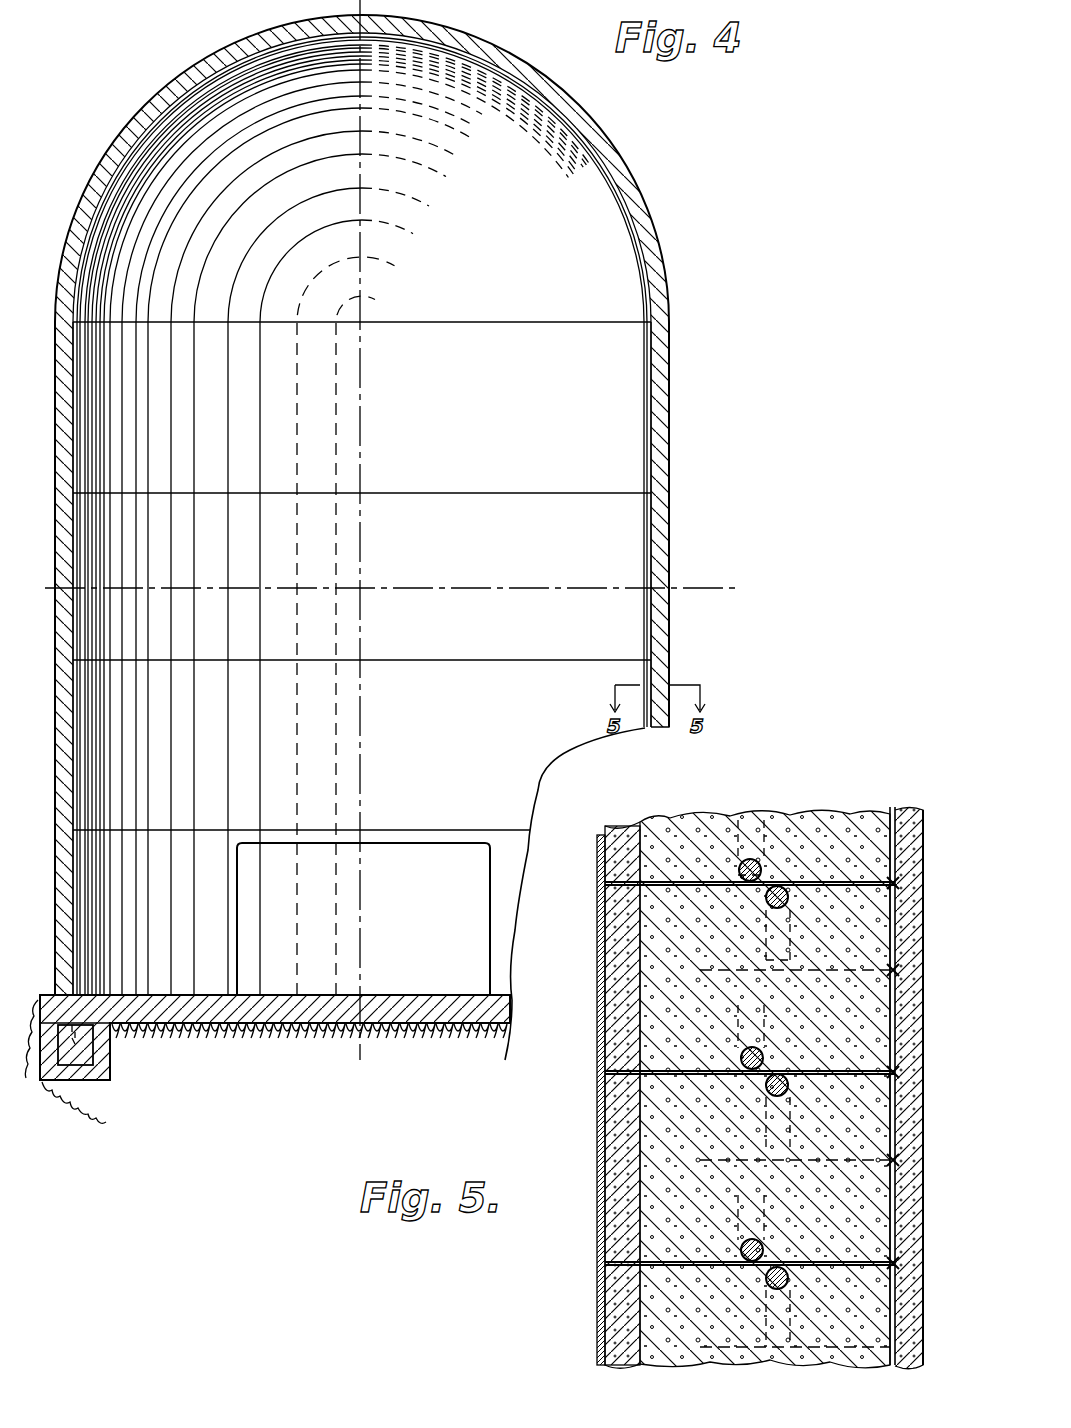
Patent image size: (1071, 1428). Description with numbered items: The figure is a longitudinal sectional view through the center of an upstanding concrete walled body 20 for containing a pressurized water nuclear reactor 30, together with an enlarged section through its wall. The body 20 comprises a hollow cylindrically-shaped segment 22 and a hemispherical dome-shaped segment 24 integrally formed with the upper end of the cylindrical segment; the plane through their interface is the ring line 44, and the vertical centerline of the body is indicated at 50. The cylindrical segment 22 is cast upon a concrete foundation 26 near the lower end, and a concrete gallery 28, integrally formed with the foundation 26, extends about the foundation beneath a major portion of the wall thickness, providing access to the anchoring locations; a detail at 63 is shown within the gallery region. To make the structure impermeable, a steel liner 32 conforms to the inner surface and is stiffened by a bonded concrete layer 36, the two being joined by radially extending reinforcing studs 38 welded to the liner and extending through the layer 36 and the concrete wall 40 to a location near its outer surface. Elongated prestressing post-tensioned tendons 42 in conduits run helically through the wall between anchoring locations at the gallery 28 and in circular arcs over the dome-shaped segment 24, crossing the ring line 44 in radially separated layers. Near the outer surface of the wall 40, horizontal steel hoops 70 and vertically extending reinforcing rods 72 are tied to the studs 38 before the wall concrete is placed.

In FIG. 4, the concrete walled body 20 is at (684, 312).
In FIG. 4, the cylindrically-shaped segment 22 is at (668, 463).
In FIG. 5, the cylindrically-shaped segment 22 is at (925, 1020).
In FIG. 4, the dome-shaped segment 24 is at (600, 134).
In FIG. 4, the foundation 26 is at (190, 1015).
In FIG. 4, the gallery 28 is at (100, 1070).
In FIG. 4, the pressurized water nuclear reactor 30 is at (430, 853).
In FIG. 4, the steel liner 32 is at (648, 505).
In FIG. 5, the steel liner 32 is at (598, 1103).
In FIG. 4, the concrete surface 36 is at (645, 625).
In FIG. 5, the concrete surface 36 is at (618, 1302).
In FIG. 5, the reinforcing studs 38 is at (900, 945).
In FIG. 4, the concrete wall 40 is at (668, 560).
In FIG. 5, the concrete wall 40 is at (810, 818).
In FIG. 4, the prestressing post-tensioned tendons 42 is at (75, 240).
In FIG. 5, the prestressing post-tensioned tendons 42 is at (718, 815).
In FIG. 4, the ring line 44 is at (63, 325).
In FIG. 4, the center axis 50 is at (358, 230).
In FIG. 4, the anchor 63 is at (75, 1058).
In FIG. 5, the steel hoops 70 is at (895, 808).
In FIG. 5, the vertically extending reinforcing rods 72 is at (897, 971).